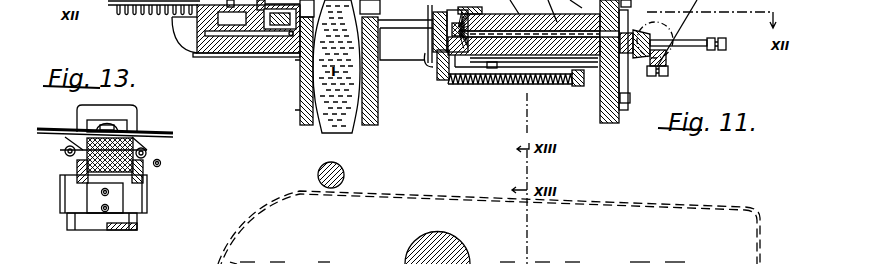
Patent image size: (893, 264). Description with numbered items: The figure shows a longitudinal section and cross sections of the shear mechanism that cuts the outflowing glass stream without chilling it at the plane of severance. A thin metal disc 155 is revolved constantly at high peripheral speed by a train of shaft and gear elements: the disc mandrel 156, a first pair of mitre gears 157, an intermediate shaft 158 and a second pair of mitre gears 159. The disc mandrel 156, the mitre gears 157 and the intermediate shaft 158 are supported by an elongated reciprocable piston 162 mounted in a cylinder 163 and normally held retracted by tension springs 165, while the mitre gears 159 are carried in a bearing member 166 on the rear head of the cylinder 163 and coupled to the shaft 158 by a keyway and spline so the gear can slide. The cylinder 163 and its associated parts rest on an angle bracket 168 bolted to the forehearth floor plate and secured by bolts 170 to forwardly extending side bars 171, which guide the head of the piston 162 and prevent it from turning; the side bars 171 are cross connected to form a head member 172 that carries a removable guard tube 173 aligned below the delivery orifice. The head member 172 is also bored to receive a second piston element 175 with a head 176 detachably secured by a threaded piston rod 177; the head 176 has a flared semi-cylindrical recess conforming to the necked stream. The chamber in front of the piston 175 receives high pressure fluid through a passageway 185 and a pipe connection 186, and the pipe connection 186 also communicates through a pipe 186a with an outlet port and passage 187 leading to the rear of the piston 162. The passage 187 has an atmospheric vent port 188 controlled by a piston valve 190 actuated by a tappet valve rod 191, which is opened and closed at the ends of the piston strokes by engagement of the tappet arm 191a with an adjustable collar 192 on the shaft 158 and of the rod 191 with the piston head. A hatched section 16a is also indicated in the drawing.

In FIG. 13, the thin metal disc 155 is at (160, 130).
In FIG. 11, the disc mandrel 156 is at (428, 60).
In FIG. 11, the mitre gears 157 is at (438, 30).
In FIG. 13, the intermediate shaft 158 is at (77, 131).
In FIG. 11, the mitre gears 159 is at (640, 70).
In FIG. 13, the reciprocable piston 162 is at (78, 164).
In FIG. 13, the cylinder 163 is at (144, 139).
In FIG. 12, the cylinder 163 is at (543, 259).
In FIG. 11, the tension springs 165 is at (473, 85).
In FIG. 13, the tension springs 165 is at (64, 149).
In FIG. 12, the tension springs 165 is at (508, 263).
In FIG. 12, the bearing member 166 is at (640, 259).
In FIG. 12, the angle bracket 168 is at (675, 256).
In FIG. 13, the bolts 170 is at (85, 180).
In FIG. 11, the side bars 171 is at (399, 53).
In FIG. 13, the side bars 171 is at (80, 198).
In FIG. 12, the side bars 171 is at (573, 263).
In FIG. 11, the head member 172 is at (271, 56).
In FIG. 12, the head member 172 is at (230, 262).
In FIG. 11, the removable guard tube 173 is at (367, 117).
In FIG. 12, the removable guard tube 173 is at (322, 263).
In FIG. 11, the second piston element 175 is at (229, 56).
In FIG. 12, the second piston element 175 is at (245, 260).
In FIG. 12, the head 176 is at (276, 252).
In FIG. 11, the threaded piston rod 177 is at (247, 56).
In FIG. 11, the passageway 185 is at (207, 56).
In FIG. 11, the pipe connection 186 is at (289, 58).
In FIG. 12, the pipe 186a is at (470, 250).
In FIG. 11, the outlet port and passage 187 is at (580, 58).
In FIG. 11, the atmospheric vent port 188 is at (632, 62).
In FIG. 11, the piston valve 190 is at (579, 86).
In FIG. 11, the tappet valve rod 191 is at (515, 66).
In FIG. 11, the tappet arm 191a is at (667, 57).
In FIG. 11, the adjustable collar 192 is at (718, 32).
In FIG. 12, the rod section 16a is at (344, 175).